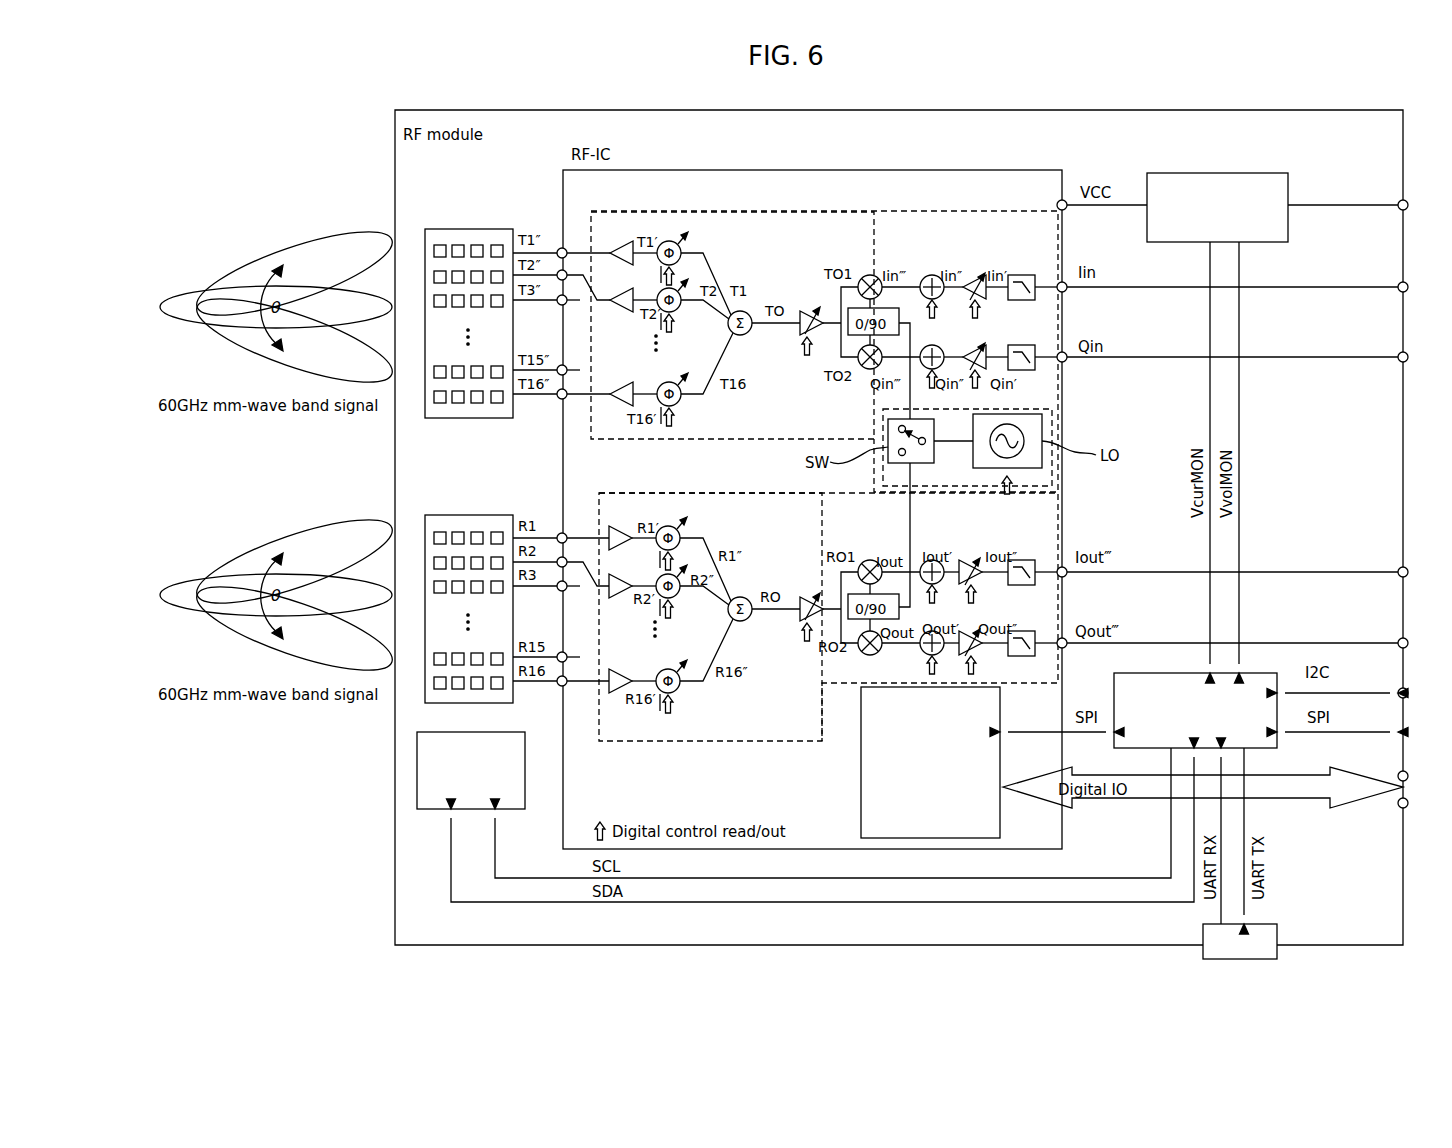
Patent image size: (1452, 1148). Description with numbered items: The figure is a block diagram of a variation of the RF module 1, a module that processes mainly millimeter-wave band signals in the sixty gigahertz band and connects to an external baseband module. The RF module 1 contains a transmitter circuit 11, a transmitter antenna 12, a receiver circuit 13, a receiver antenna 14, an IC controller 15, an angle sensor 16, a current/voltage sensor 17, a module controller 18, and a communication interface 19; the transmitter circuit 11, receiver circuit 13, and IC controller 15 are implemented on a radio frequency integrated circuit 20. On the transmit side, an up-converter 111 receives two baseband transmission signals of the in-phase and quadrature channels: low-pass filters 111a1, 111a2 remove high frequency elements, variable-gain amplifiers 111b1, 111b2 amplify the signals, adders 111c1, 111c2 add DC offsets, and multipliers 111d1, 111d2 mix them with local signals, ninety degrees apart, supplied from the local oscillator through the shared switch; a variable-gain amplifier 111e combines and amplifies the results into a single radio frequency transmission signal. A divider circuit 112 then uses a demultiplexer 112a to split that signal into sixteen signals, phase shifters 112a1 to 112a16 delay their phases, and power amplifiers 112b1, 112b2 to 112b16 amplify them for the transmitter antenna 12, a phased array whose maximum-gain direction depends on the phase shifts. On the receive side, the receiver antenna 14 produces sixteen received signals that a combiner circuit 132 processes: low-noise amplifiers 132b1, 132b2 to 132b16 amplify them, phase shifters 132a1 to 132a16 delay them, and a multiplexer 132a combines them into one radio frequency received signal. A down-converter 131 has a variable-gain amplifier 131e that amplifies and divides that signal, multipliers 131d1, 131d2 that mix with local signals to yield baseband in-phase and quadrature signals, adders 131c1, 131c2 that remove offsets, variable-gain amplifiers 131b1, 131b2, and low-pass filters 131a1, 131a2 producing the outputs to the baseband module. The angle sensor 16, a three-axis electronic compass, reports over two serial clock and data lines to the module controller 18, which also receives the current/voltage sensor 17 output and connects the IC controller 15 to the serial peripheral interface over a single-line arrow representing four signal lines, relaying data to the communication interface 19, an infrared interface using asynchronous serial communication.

The RF module 1 is at (1340, 110).
The transmitter circuit 11 is at (912, 212).
The transmitter antenna 12 is at (490, 229).
The receiver circuit 13 is at (727, 494).
The receiver antenna 14 is at (490, 515).
The IC controller 15 is at (1000, 722).
The angle sensor 16 is at (490, 732).
The current/voltage sensor 17 is at (1255, 173).
The module controller 18 is at (1277, 740).
The communication interface 19 is at (1277, 934).
The radio frequency integrated circuit 20 is at (1000, 170).
The up-converter 111 is at (825, 266).
The low-pass filter 111a1 is at (1028, 275).
The low-pass filter 111a2 is at (1028, 345).
The variable-gain amplifier 111b1 is at (984, 276).
The variable-gain amplifier 111b2 is at (984, 347).
The adder 111c1 is at (930, 275).
The adder 111c2 is at (928, 333).
The multiplier 111d1 is at (866, 275).
The multiplier 111d2 is at (862, 366).
The variable-gain amplifier 111e is at (812, 310).
The divider circuit 112 is at (738, 262).
The demultiplexer 112a is at (747, 334).
The phase shifter 112a1 is at (683, 248).
The phase shifter 112a16 is at (676, 406).
The power amplifier 112b1 is at (625, 241).
The power amplifier 112b2 is at (625, 288).
The power amplifier 112b16 is at (625, 382).
The down-converter 131 is at (855, 549).
The low-pass filter 131a1 is at (1028, 560).
The low-pass filter 131a2 is at (1028, 631).
The variable-gain amplifier 131b1 is at (974, 560).
The variable-gain amplifier 131b2 is at (980, 652).
The adder 131c1 is at (928, 560).
The adder 131c2 is at (922, 651).
The multiplier 131d1 is at (866, 560).
The multiplier 131d2 is at (862, 652).
The variable-gain amplifier 131e is at (812, 596).
The combiner circuit 132 is at (752, 550).
The multiplexer 132a is at (747, 620).
The phase shifter 132a1 is at (682, 533).
The phase shifter 132a16 is at (675, 693).
The low-noise amplifier 132b1 is at (625, 526).
The low-noise amplifier 132b2 is at (625, 574).
The low-noise amplifier 132b16 is at (625, 669).